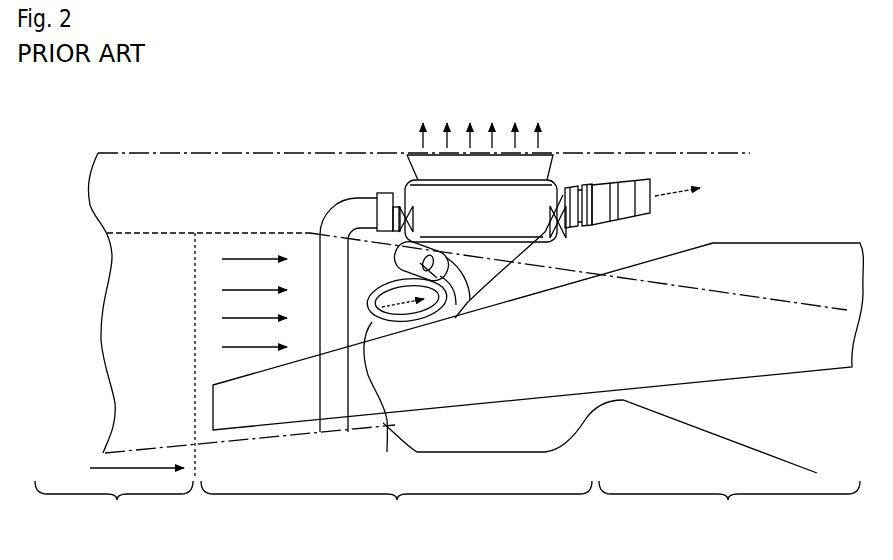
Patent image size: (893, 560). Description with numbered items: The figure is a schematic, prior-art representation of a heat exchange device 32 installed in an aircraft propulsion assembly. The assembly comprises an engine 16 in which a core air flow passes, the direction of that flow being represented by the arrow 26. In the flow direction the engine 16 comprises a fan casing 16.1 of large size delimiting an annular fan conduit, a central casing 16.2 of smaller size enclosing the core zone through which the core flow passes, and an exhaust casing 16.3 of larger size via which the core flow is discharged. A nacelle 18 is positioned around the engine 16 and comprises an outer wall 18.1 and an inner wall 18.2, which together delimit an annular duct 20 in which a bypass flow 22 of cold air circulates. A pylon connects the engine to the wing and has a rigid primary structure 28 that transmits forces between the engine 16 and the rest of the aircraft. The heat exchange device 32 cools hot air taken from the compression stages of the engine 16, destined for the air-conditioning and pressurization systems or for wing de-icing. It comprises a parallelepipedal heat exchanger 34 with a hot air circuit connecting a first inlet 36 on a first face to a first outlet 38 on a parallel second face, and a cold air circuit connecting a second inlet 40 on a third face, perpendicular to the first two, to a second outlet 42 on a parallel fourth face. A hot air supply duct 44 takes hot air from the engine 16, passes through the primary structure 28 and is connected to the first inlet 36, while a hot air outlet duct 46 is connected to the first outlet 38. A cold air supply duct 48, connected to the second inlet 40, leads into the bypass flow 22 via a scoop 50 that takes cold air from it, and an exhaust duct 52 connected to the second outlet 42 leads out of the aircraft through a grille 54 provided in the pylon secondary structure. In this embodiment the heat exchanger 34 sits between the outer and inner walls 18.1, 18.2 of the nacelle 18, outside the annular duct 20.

The engine 16 is at (742, 441).
The fan casing 16.1 is at (115, 383).
The central casing 16.2 is at (396, 507).
The exhaust casing 16.3 is at (729, 507).
The nacelle 18 is at (157, 150).
The outer wall 18.1 is at (118, 153).
The inner wall 18.2 is at (115, 231).
The annular duct 20 is at (207, 327).
The bypass flow 22 is at (237, 290).
The arrow 26 is at (128, 466).
The primary structure 28 is at (820, 243).
The heat exchange device 32 is at (377, 141).
The heat exchanger 34 is at (500, 215).
The first inlet 36 is at (378, 196).
The first outlet 38 is at (582, 186).
The second inlet 40 is at (510, 247).
The second outlet 42 is at (523, 180).
The hot air supply duct 44 is at (335, 255).
The hot air outlet duct 46 is at (620, 178).
The cold air supply duct 48 is at (485, 282).
The scoop 50 is at (378, 400).
The exhaust duct 52 is at (420, 167).
The grille 54 is at (497, 155).